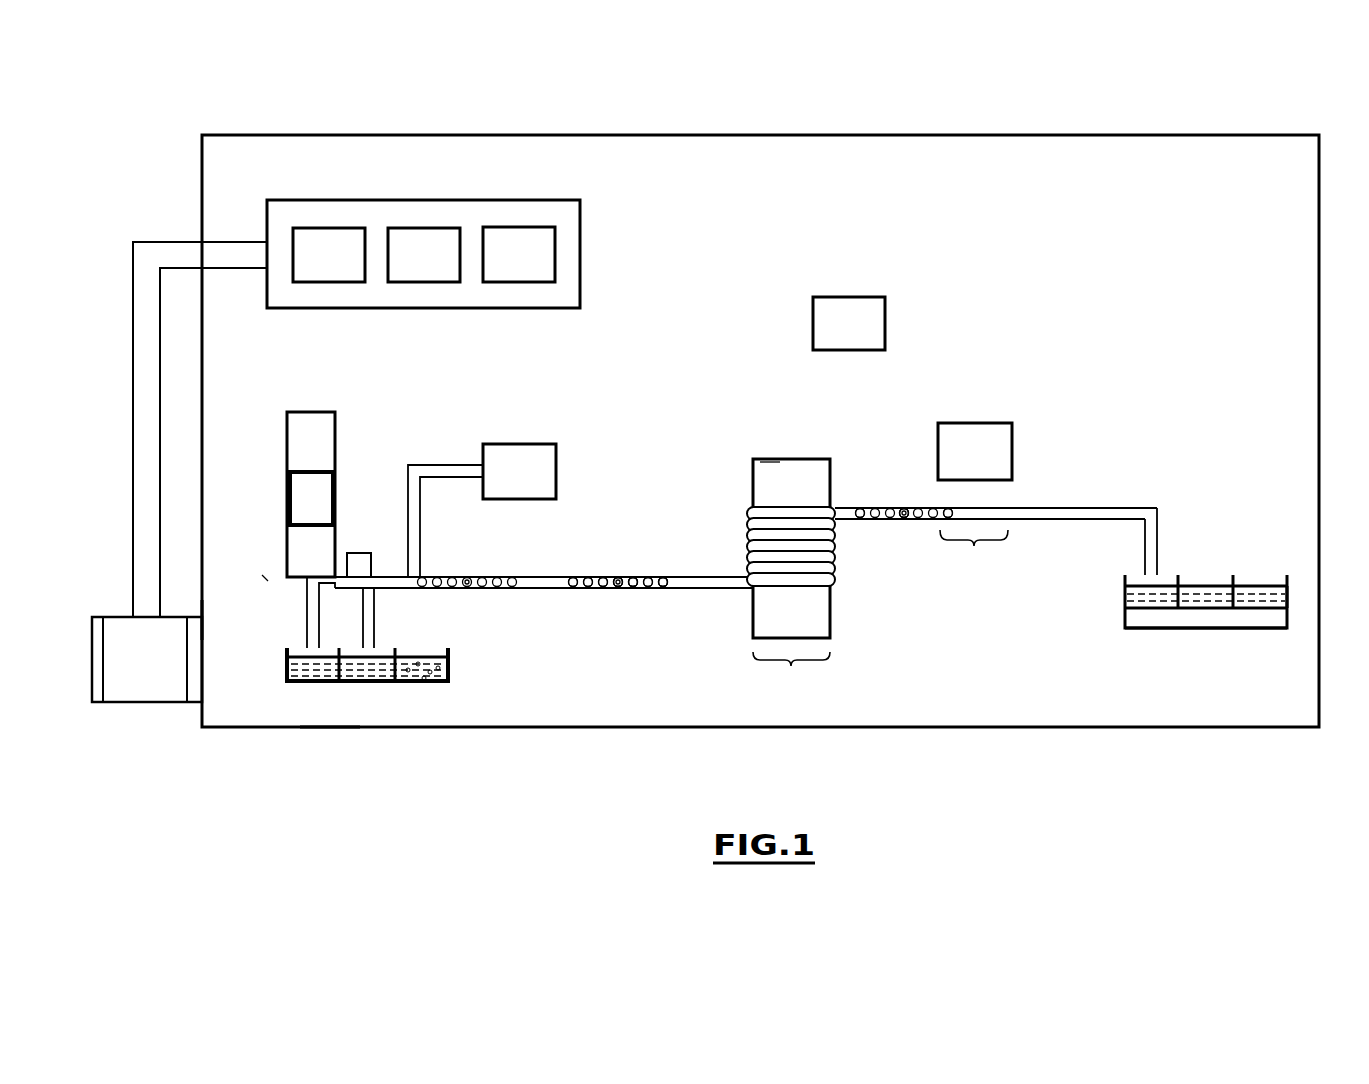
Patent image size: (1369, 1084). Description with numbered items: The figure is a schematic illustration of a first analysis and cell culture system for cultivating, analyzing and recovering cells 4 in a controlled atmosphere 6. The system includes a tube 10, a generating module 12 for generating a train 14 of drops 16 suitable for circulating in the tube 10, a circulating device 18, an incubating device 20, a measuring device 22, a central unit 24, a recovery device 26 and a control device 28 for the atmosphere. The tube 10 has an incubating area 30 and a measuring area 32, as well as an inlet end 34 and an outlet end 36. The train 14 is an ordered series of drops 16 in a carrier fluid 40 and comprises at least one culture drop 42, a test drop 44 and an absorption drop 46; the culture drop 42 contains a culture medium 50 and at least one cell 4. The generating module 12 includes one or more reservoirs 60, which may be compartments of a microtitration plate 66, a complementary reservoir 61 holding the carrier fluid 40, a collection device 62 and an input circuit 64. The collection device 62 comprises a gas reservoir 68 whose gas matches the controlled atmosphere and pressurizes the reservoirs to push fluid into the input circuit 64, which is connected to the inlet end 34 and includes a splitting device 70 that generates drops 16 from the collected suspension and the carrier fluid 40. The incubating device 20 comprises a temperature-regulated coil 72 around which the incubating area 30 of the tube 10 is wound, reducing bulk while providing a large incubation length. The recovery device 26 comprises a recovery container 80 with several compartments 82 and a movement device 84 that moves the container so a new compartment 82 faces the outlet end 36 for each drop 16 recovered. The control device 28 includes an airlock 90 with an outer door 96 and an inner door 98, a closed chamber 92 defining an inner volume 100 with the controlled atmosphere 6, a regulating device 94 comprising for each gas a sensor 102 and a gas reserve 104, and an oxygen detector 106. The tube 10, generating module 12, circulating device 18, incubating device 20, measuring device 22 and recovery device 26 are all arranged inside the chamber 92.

The cells 4 is at (618, 589).
The controlled atmosphere 6 is at (965, 348).
The tube 10 is at (519, 591).
The module for generating a train of drops 12 is at (265, 580).
The train of drops 14 is at (617, 578).
The drops 16 is at (624, 590).
The circulating device 18 is at (507, 487).
The incubating device 20 is at (798, 470).
The measuring device 22 is at (963, 466).
The central unit 24 is at (837, 338).
The recovery device 26 is at (1209, 535).
The control device for the atmosphere 28 is at (580, 729).
The incubating area 30 is at (791, 678).
The measuring area 32 is at (996, 542).
The inlet end 34 is at (416, 577).
The outlet end 36 is at (1147, 548).
The carrier fluid 40 is at (517, 578).
The culture drop 42 is at (467, 577).
The test drop 44 is at (598, 576).
The absorption drop 46 is at (581, 577).
The culture medium 50 is at (898, 521).
The reservoirs 60 is at (417, 668).
The complementary reservoir 61 is at (358, 565).
The collection device 62 is at (318, 441).
The input circuit 64 is at (370, 578).
The microtitration plate 66 is at (279, 664).
The gas reservoir 68 is at (299, 512).
The splitting device 70 is at (345, 583).
The coil 72 is at (770, 468).
The recovery container 80 is at (1296, 590).
The compartments 82 is at (1208, 595).
The movement device 84 is at (1153, 620).
The airlock 90 is at (138, 709).
The closed chamber 92 is at (331, 733).
The regulating device 94 is at (583, 271).
The outer door 96 is at (91, 673).
The inner door 98 is at (199, 612).
The inner volume 100 is at (673, 268).
The sensor 102 is at (407, 272).
The gas reserve 104 is at (502, 272).
The oxygen detector 106 is at (312, 272).